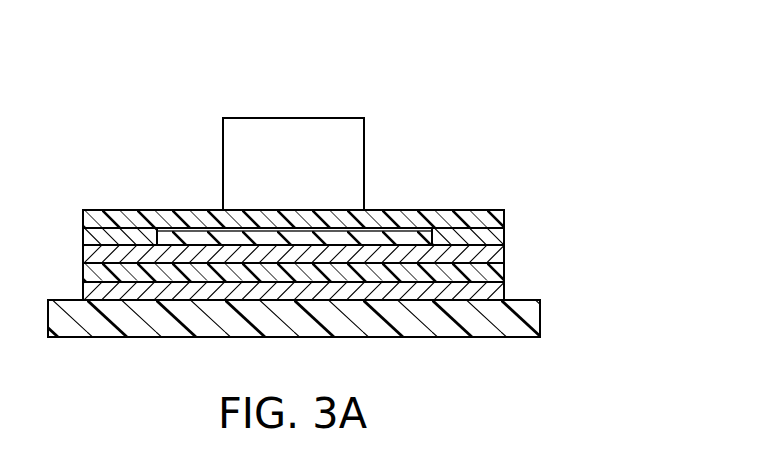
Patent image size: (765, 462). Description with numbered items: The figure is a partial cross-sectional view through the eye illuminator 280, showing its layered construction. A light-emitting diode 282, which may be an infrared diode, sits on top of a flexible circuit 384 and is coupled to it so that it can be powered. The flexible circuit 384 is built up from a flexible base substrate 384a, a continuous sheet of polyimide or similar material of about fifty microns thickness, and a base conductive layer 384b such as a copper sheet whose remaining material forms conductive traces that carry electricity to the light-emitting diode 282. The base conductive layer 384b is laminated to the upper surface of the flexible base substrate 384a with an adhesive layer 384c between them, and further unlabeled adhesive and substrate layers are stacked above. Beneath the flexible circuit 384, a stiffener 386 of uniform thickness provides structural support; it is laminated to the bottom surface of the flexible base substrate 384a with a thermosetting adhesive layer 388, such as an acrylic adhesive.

The eye illuminator 280 is at (561, 95).
The light-emitting diode 282 is at (328, 157).
The flexible circuit 384 is at (528, 185).
The flexible base substrate 384a is at (504, 270).
The base conductive layer 384b is at (504, 242).
The adhesive layer 384c is at (504, 250).
The stiffener 386 is at (541, 318).
The adhesive layer 388 is at (504, 289).